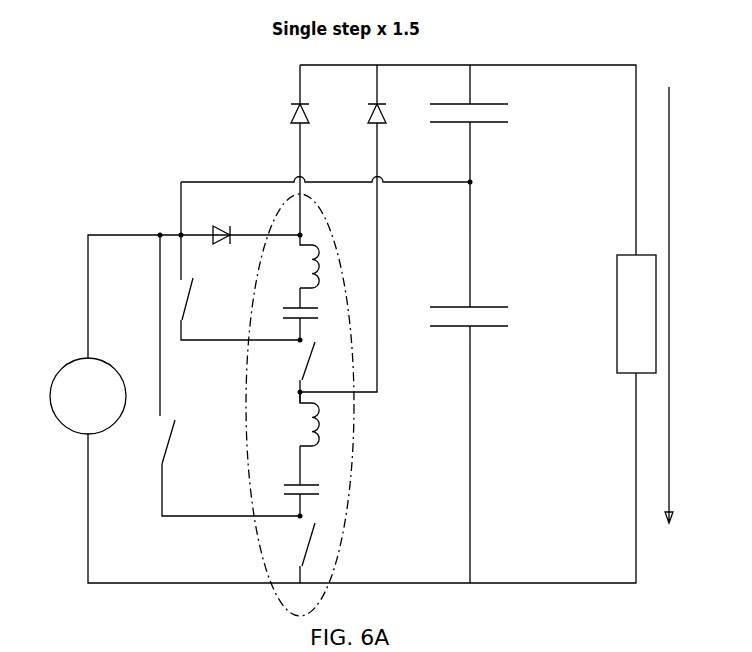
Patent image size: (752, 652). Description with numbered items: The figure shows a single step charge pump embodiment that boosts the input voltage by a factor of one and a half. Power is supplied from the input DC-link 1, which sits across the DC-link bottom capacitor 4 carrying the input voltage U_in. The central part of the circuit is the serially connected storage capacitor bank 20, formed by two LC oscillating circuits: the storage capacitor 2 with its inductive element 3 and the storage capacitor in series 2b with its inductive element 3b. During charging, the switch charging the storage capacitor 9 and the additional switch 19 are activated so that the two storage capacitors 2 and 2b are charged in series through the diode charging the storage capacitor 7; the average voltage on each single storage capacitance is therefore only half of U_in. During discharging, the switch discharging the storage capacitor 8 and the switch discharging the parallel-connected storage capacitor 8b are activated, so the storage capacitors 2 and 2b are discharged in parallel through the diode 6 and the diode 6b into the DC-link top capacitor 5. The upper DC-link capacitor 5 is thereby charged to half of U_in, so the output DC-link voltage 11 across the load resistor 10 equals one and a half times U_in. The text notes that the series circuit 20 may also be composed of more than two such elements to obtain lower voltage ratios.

The input DC-link 1 is at (78, 396).
The storage capacitor 2 is at (292, 313).
The storage capacitor in series 2b is at (287, 489).
The inductive element 3 is at (302, 261).
The inductive element in series 3b is at (296, 419).
The DC-link bottom capacitor 4 is at (481, 311).
The DC-link top capacitor 5 is at (488, 111).
The diode discharging the storage capacitor 6 is at (290, 95).
The diode discharging the storage capacitor connected in parallel 6b is at (363, 95).
The diode charging the storage capacitor 7 is at (221, 224).
The switch discharging the storage capacitor 8 is at (193, 307).
The switch discharging the storage capacitor connected in parallel 8b is at (182, 442).
The switch charging the storage capacitor 9 is at (318, 544).
The load resistor 10 is at (621, 314).
The output DC-link voltage 11 is at (688, 304).
The additional switch allowing a series connection of storage capacitors 19 is at (295, 361).
The storage capacitor bank connected in series 20 is at (357, 453).